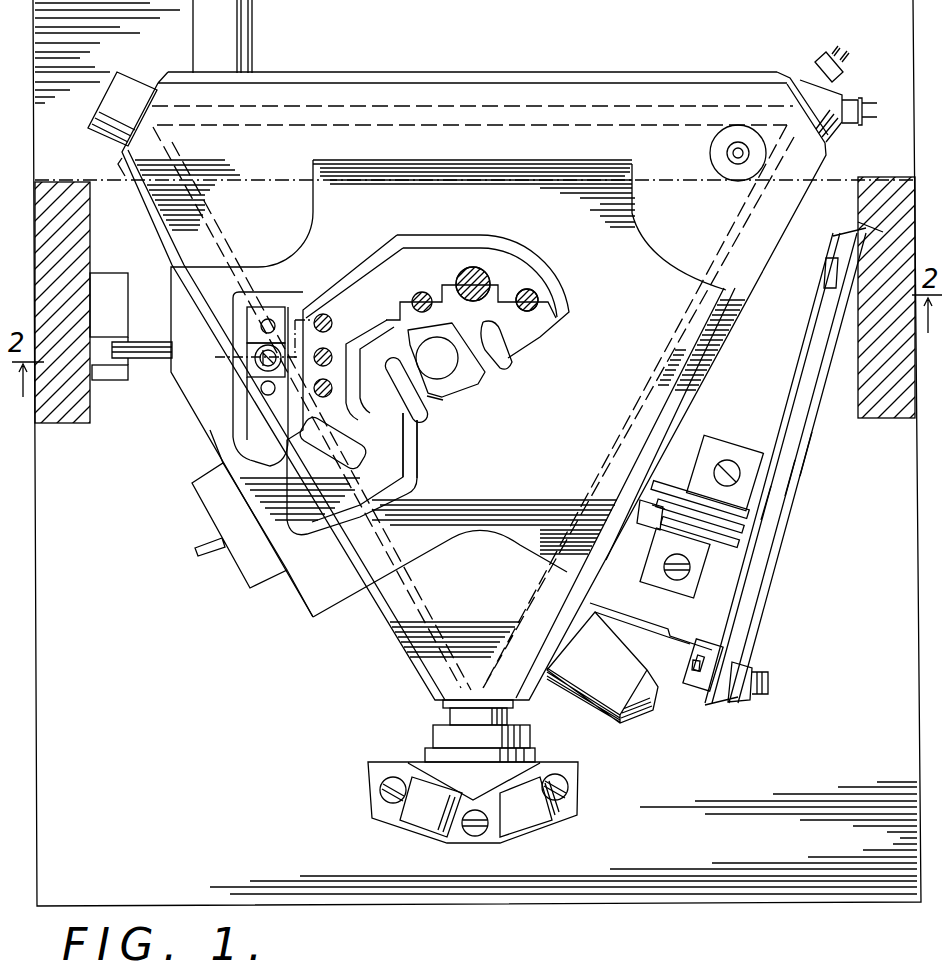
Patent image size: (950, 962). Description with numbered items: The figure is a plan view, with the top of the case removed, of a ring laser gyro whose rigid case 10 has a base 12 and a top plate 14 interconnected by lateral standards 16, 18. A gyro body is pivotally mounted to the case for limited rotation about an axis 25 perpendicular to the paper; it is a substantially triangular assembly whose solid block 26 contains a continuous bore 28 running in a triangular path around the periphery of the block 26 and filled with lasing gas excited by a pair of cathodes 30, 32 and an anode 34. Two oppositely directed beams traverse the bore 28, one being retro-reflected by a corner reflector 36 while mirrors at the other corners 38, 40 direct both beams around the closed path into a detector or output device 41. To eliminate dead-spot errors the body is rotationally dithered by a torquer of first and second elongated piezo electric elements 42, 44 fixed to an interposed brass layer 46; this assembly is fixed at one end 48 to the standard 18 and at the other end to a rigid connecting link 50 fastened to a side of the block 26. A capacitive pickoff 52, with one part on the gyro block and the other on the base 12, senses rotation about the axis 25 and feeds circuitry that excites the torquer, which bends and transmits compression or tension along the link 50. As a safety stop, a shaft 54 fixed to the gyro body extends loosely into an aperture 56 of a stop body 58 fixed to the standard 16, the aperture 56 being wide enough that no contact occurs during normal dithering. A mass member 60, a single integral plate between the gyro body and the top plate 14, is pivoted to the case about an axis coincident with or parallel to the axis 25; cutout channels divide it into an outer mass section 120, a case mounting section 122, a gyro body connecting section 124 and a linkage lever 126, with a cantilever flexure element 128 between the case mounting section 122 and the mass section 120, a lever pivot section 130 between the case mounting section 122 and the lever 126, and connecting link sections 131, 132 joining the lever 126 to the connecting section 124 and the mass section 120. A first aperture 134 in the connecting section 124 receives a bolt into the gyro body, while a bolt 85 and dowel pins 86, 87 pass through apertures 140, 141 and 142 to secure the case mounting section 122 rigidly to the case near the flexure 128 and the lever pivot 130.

The case 10 is at (440, 907).
The base 12 is at (172, 823).
The top plate 14 is at (262, 178).
The lateral standard 16 is at (55, 182).
The lateral standard 18 is at (890, 420).
The axis 25 is at (480, 350).
The solid block 26 is at (425, 662).
The continuous bore 28 is at (385, 108).
The cathode 30 is at (602, 732).
The cathode 32 is at (248, 40).
The anode 34 is at (711, 148).
The corner reflector 36 is at (530, 830).
The corner 38 is at (147, 88).
The corner 40 is at (828, 144).
The detector or output device 41 is at (425, 822).
The piezo electric element 42 is at (806, 457).
The piezo electric element 44 is at (768, 506).
The brass layer 46 is at (790, 484).
The end 48 is at (816, 304).
The connecting link 50 is at (658, 628).
The capacitive pickoff 52 is at (698, 480).
The shaft 54 is at (155, 342).
The aperture 56 is at (100, 380).
The stop body 58 is at (103, 273).
The mass member 60 is at (676, 243).
The bolt 85 is at (480, 265).
The dowel pin 86 is at (395, 304).
The dowel pin 87 is at (536, 306).
The mass section 120 is at (562, 457).
The case mounting section 122 is at (438, 255).
The gyro body connecting section 124 is at (213, 430).
The linkage lever 126 is at (415, 470).
The cantilever flexure element 128 is at (508, 358).
The lever pivot section 130 is at (300, 420).
The connecting link section 131 is at (280, 462).
The connecting link section 132 is at (440, 399).
The first aperture 134 is at (240, 357).
The aperture 140 is at (475, 282).
The aperture 141 is at (415, 296).
The aperture 142 is at (532, 298).